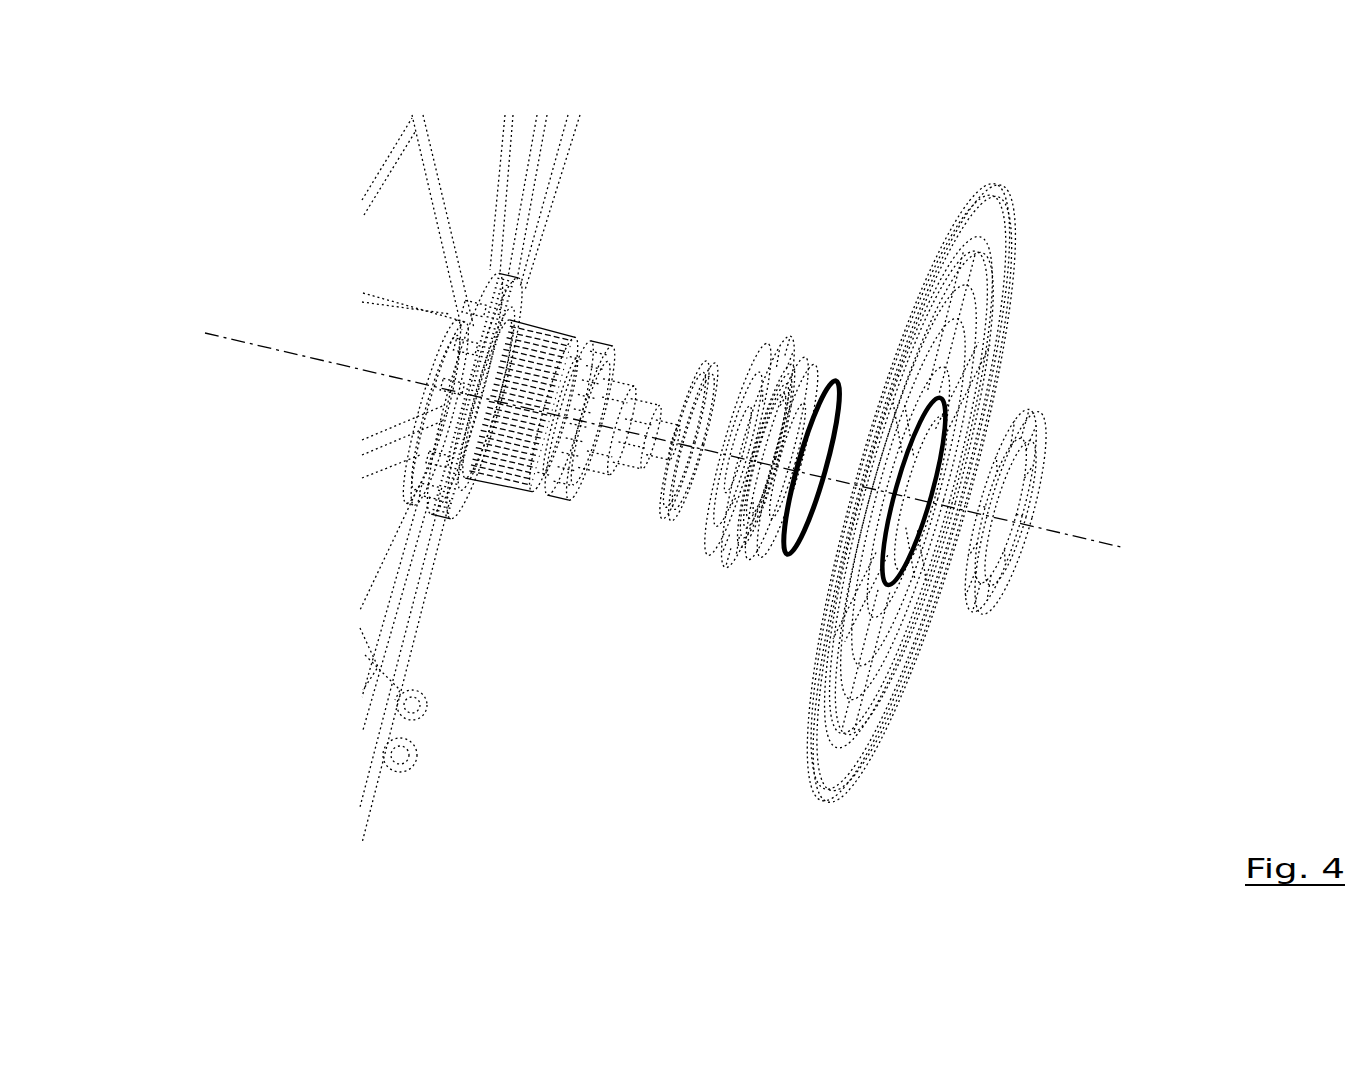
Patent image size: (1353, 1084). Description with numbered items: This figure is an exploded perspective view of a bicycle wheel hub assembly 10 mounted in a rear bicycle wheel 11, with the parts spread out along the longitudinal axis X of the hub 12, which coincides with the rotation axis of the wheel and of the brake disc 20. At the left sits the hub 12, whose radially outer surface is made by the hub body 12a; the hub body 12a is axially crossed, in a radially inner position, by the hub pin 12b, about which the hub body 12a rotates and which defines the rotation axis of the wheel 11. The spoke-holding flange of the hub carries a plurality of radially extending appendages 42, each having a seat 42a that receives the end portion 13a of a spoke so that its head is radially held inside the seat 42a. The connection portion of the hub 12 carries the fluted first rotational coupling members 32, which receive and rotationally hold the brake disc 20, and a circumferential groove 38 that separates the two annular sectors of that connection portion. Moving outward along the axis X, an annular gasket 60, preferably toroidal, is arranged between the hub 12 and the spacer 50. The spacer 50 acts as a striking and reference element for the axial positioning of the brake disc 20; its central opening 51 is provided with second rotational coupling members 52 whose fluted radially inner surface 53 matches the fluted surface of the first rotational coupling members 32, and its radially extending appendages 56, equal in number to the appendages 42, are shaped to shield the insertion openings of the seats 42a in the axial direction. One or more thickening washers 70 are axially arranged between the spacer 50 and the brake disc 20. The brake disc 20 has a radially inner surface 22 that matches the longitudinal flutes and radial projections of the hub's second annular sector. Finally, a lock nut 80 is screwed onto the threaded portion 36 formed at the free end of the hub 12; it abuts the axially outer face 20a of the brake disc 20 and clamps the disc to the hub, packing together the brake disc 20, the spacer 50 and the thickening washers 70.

The bicycle wheel hub assembly 10 is at (603, 697).
The rear bicycle wheel 11 is at (218, 223).
The hub 12 is at (358, 390).
The hub body 12a is at (545, 463).
The hub pin 12b is at (627, 455).
The end portion of the spoke 13a is at (443, 420).
The brake disc 20 is at (813, 742).
The axially outer face of the brake disc 20a is at (843, 777).
The radially inner surface of the brake disc 22 is at (912, 498).
The first rotational coupling members 32 is at (507, 497).
The threaded portion 36 is at (587, 347).
The circumferential groove 38 is at (490, 443).
The appendages 42 is at (432, 412).
The seat 42a is at (484, 342).
The spacer 50 is at (712, 560).
The central opening 51 is at (803, 432).
The second rotational coupling members 52 is at (740, 547).
The fluted radially inner surface 53 is at (766, 558).
The appendages 56 is at (783, 344).
The annular gasket 60 is at (690, 372).
The thickening washers 70 is at (789, 425).
The lock nut 80 is at (1035, 417).
The longitudinal axis X is at (1074, 534).